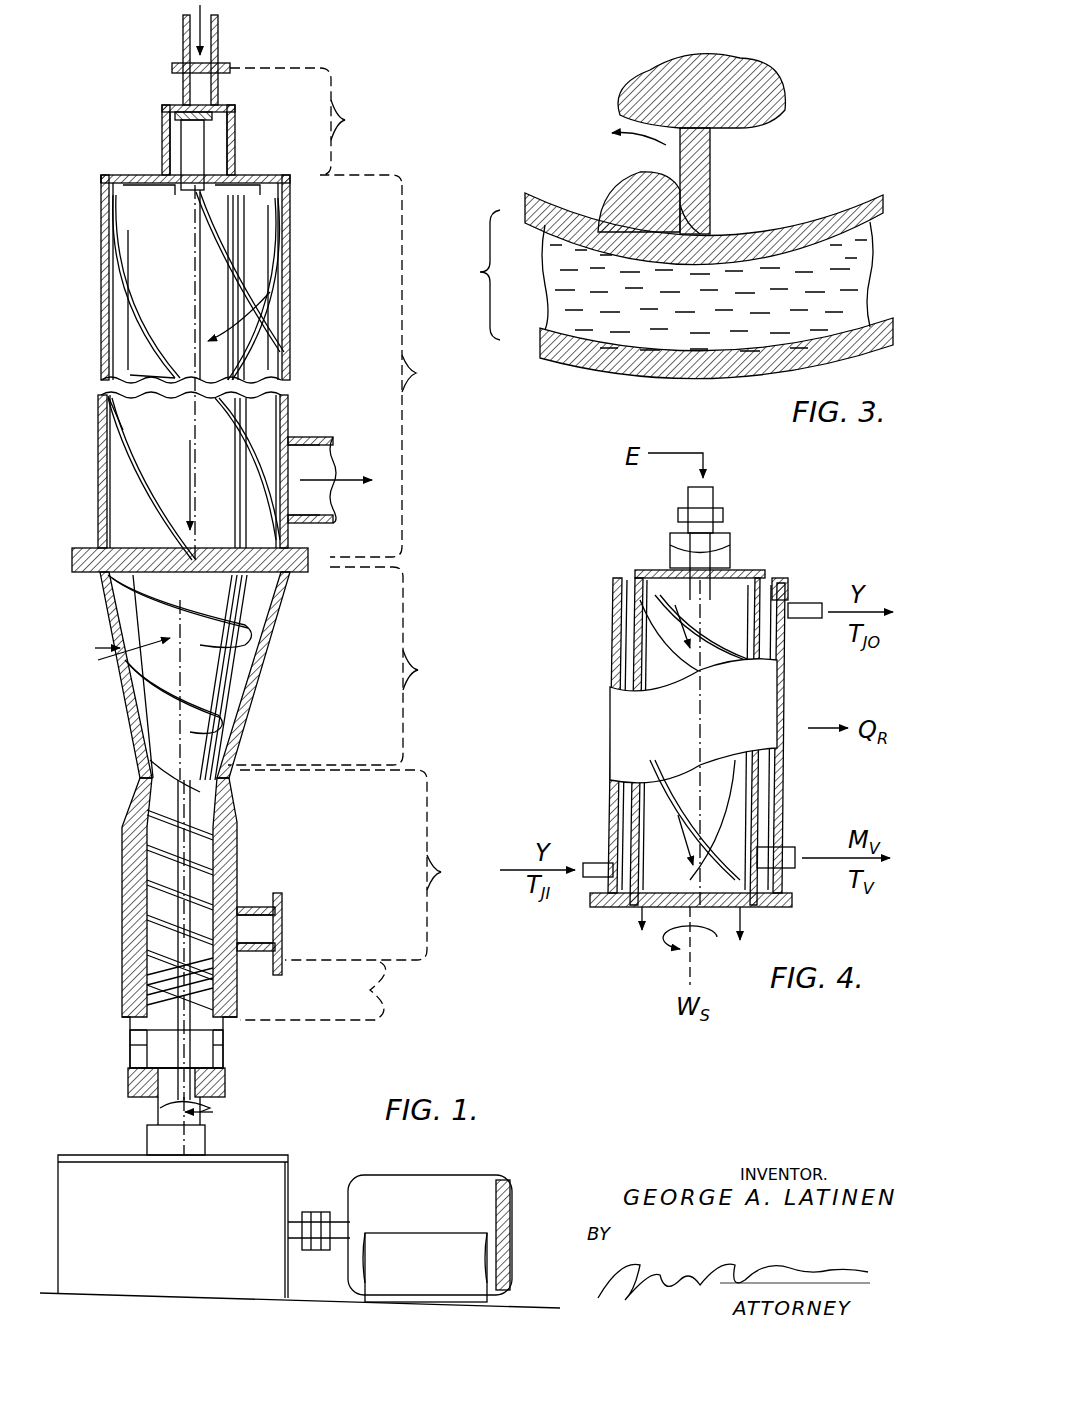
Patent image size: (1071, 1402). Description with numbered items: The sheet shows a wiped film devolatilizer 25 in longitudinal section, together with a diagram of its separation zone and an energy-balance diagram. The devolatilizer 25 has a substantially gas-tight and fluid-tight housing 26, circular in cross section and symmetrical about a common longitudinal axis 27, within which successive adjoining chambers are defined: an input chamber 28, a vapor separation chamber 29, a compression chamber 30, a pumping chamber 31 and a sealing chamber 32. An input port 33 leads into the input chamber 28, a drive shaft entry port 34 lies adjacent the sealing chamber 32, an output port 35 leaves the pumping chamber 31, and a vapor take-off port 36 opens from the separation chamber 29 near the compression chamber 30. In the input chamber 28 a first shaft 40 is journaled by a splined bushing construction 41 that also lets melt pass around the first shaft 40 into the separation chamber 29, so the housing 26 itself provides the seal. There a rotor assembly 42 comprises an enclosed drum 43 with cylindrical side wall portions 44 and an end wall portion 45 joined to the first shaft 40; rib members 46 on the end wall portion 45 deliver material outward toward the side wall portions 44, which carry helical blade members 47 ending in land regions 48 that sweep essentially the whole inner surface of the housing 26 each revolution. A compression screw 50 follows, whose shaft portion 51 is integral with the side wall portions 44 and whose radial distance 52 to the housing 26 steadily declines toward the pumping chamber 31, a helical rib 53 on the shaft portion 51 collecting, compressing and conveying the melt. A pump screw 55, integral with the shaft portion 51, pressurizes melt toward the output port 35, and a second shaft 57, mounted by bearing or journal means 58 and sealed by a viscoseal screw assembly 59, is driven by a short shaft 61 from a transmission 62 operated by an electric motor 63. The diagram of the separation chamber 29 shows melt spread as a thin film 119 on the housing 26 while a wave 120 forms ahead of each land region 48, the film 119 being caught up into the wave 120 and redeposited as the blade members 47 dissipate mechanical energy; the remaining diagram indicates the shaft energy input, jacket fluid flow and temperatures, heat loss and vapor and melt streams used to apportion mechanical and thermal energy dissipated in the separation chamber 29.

In FIG. 1, the wiped film devolatilizer 25 is at (100, 172).
In FIG. 1, the housing 26 is at (292, 290).
In FIG. 3, the housing 26 is at (482, 272).
In FIG. 1, the common longitudinal axis 27 is at (193, 237).
In FIG. 1, the input chamber 28 is at (297, 118).
In FIG. 1, the vapor separation chamber 29 is at (362, 356).
In FIG. 3, the vapor separation chamber 29 is at (585, 150).
In FIG. 1, the compression chamber 30 is at (370, 710).
In FIG. 1, the pumping chamber 31 is at (395, 822).
In FIG. 1, the sealing chamber 32 is at (257, 990).
In FIG. 1, the input port 33 is at (195, 88).
In FIG. 1, the drive shaft entry port 34 is at (162, 1108).
In FIG. 1, the output port 35 is at (285, 920).
In FIG. 1, the vapor take-off port 36 is at (312, 466).
In FIG. 1, the first shaft 40 is at (205, 150).
In FIG. 1, the splined bushing construction 41 is at (178, 137).
In FIG. 1, the rotor assembly 42 is at (165, 255).
In FIG. 3, the rotor assembly 42 is at (730, 104).
In FIG. 1, the drum 43 is at (140, 362).
In FIG. 1, the cylindrical side wall portions 44 is at (112, 412).
In FIG. 1, the end wall portion 45 is at (142, 185).
In FIG. 1, the rib members 46 is at (246, 185).
In FIG. 1, the helical blade members 47 is at (125, 220).
In FIG. 3, the helical blade members 47 is at (700, 178).
In FIG. 1, the land regions 48 is at (240, 258).
In FIG. 3, the land regions 48 is at (690, 215).
In FIG. 1, the compression screw 50 is at (180, 675).
In FIG. 1, the shaft portion 51 is at (165, 742).
In FIG. 1, the radial distance 52 is at (130, 628).
In FIG. 1, the helical rib 53 is at (250, 590).
In FIG. 1, the pump screw 55 is at (180, 850).
In FIG. 1, the second shaft 57 is at (170, 1050).
In FIG. 1, the bearing or journal means 58 is at (215, 1085).
In FIG. 1, the viscoseal screw assembly 59 is at (150, 980).
In FIG. 1, the short shaft 61 is at (190, 1120).
In FIG. 1, the transmission 62 is at (270, 1188).
In FIG. 1, the electric motor 63 is at (410, 1200).
In FIG. 3, the thin film 119 is at (770, 230).
In FIG. 3, the wave 120 is at (640, 180).